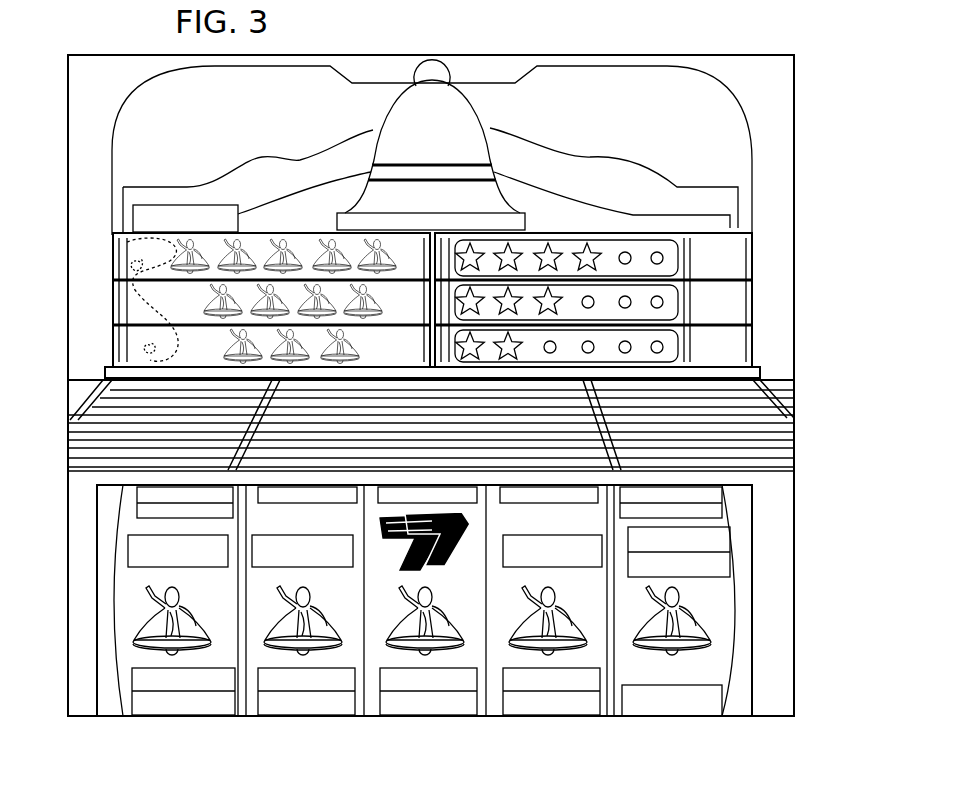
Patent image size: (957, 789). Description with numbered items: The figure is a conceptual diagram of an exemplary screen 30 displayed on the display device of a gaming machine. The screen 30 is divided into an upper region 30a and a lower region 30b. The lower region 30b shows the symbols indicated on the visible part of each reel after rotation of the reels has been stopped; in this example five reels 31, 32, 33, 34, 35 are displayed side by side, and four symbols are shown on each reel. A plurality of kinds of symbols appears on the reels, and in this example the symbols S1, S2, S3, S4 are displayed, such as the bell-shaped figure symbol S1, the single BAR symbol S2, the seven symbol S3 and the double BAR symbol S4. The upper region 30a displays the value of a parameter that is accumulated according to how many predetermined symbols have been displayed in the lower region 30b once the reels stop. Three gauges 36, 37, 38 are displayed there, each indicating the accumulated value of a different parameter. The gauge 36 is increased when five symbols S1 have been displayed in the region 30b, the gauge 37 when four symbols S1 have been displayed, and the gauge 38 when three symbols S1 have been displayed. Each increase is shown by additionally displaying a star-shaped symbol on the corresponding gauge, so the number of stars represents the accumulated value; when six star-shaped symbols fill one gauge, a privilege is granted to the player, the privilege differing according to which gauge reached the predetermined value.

The screen 30 is at (632, 52).
The region 30a is at (487, 217).
The region 30b is at (825, 383).
The reel 31 is at (141, 620).
The reel 32 is at (307, 718).
The reel 33 is at (396, 620).
The reel 34 is at (551, 718).
The reel 35 is at (673, 718).
The gauge 36 is at (557, 240).
The gauge 37 is at (601, 283).
The gauge 38 is at (644, 320).
The symbol S1 is at (148, 609).
The symbol S2 is at (132, 545).
The symbol S3 is at (380, 519).
The symbol S4 is at (135, 683).